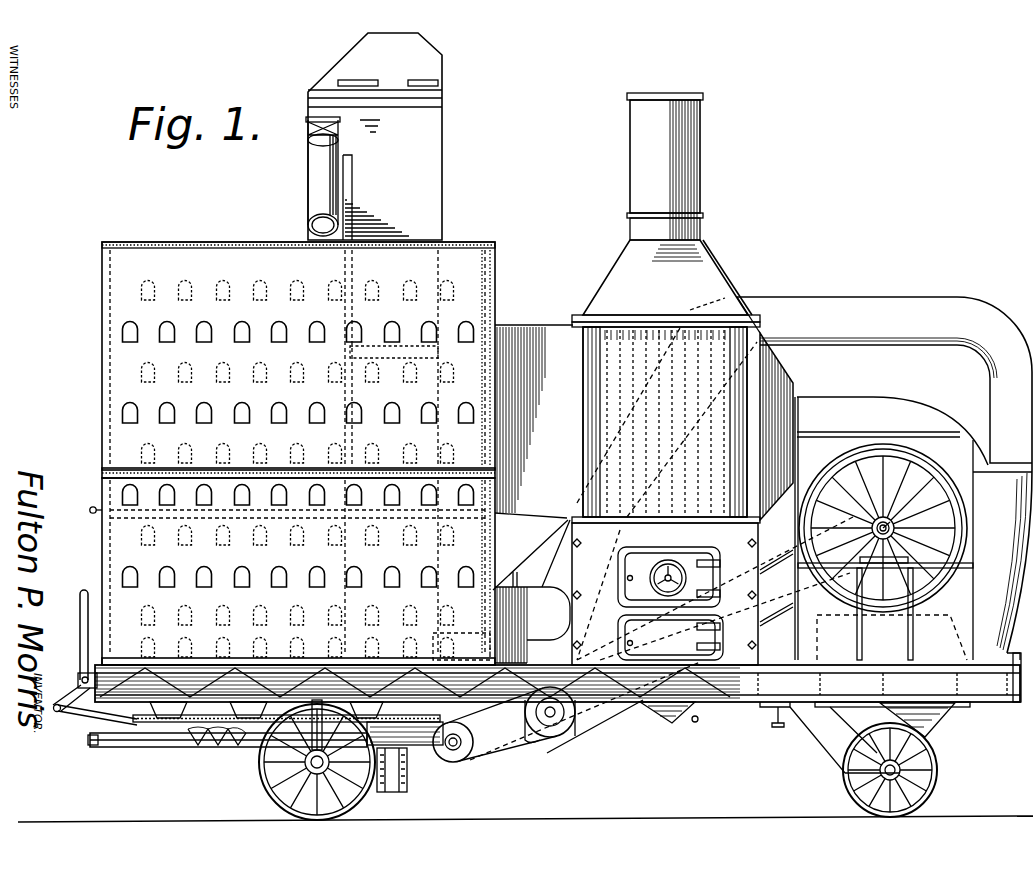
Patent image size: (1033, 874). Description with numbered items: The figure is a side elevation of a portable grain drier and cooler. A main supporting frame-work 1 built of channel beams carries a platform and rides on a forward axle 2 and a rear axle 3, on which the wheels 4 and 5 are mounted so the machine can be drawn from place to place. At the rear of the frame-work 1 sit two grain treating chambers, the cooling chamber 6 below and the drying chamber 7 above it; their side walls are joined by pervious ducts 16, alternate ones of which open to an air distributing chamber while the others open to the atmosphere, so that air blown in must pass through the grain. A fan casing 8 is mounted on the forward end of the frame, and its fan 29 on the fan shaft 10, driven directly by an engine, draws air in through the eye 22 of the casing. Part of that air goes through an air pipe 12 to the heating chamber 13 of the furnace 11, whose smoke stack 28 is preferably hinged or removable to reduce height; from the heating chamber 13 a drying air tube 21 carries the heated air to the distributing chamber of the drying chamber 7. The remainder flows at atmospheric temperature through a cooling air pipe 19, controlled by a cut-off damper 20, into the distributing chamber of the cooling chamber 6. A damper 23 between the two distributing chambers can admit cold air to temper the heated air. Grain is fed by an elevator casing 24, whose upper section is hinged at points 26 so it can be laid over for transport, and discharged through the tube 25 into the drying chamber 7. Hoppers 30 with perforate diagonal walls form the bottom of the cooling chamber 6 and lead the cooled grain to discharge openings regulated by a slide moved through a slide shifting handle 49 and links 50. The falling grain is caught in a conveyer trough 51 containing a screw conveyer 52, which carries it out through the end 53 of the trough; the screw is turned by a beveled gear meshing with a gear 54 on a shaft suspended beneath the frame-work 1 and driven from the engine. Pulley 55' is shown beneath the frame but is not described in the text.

The main supporting frame-work 1 is at (736, 686).
The forward axle 2 is at (913, 772).
The rear axle 3 is at (283, 800).
The wheel 4 is at (843, 773).
The wheel 5 is at (258, 770).
The cooling chamber 6 is at (123, 556).
The drying chamber 7 is at (120, 363).
The fan casing 8 is at (892, 410).
The fan shaft 10 is at (927, 480).
The furnace 11 is at (695, 277).
The air pipe 12 is at (768, 388).
The heating chamber 13 is at (590, 330).
The pervious ducts 16 is at (233, 433).
The cooling air pipe 19 is at (862, 307).
The cut-off damper 20 is at (527, 577).
The drying air tube 21 is at (537, 318).
The eye of the fan casing 22 is at (957, 518).
The damper 23 is at (93, 506).
The elevator casing 24 is at (313, 190).
The tube 25 is at (323, 176).
The hinge points 26 is at (350, 352).
The smoke stack 28 is at (700, 163).
The fan 29 is at (863, 463).
The hoppers 30 is at (138, 742).
The slide shifting handle 49 is at (80, 645).
The links 50 is at (95, 716).
The conveyer trough 51 is at (128, 745).
The screw conveyer 52 is at (215, 747).
The end of the trough 53 is at (92, 742).
The gear 54 is at (475, 760).
The pulley 55' is at (561, 727).